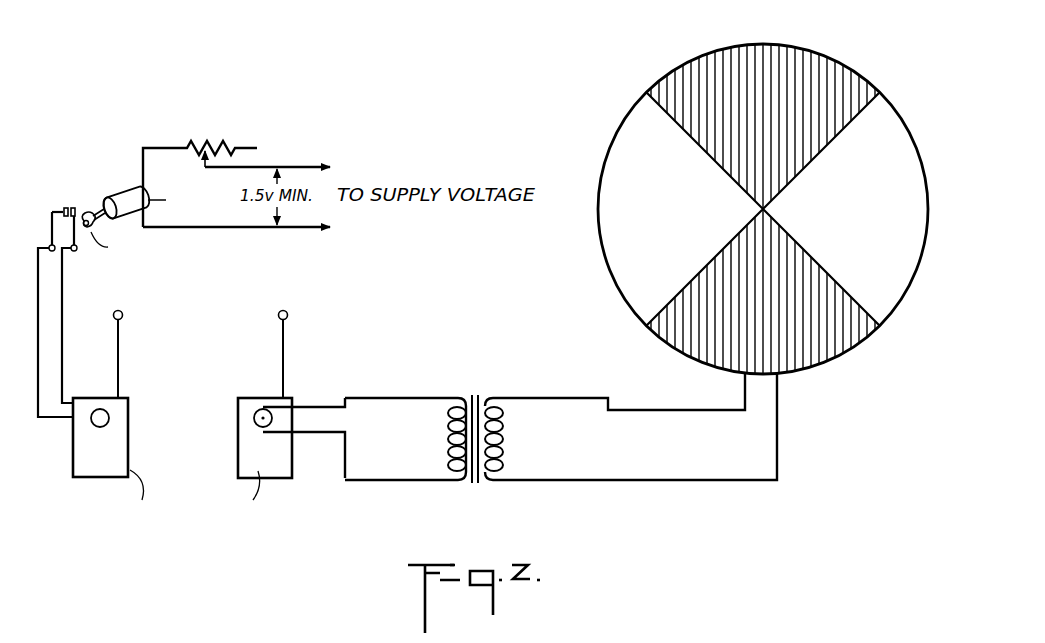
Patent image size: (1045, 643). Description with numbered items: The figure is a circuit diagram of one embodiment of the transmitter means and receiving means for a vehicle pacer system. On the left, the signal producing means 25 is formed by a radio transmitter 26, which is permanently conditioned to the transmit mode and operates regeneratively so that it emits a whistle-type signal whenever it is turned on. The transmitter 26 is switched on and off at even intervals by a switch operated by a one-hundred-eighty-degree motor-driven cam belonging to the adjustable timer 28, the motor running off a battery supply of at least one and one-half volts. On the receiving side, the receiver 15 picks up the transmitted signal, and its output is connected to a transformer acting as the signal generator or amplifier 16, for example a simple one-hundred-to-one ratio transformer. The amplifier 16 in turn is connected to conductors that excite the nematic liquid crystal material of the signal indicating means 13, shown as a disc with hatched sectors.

The signal indicating means 13 is at (912, 50).
The receiver 15 is at (243, 461).
The signal generator or amplifier 16 is at (523, 500).
The signal producing means 25 is at (139, 336).
The radio transmitter 26 is at (118, 438).
The adjustable timer 28 is at (106, 190).